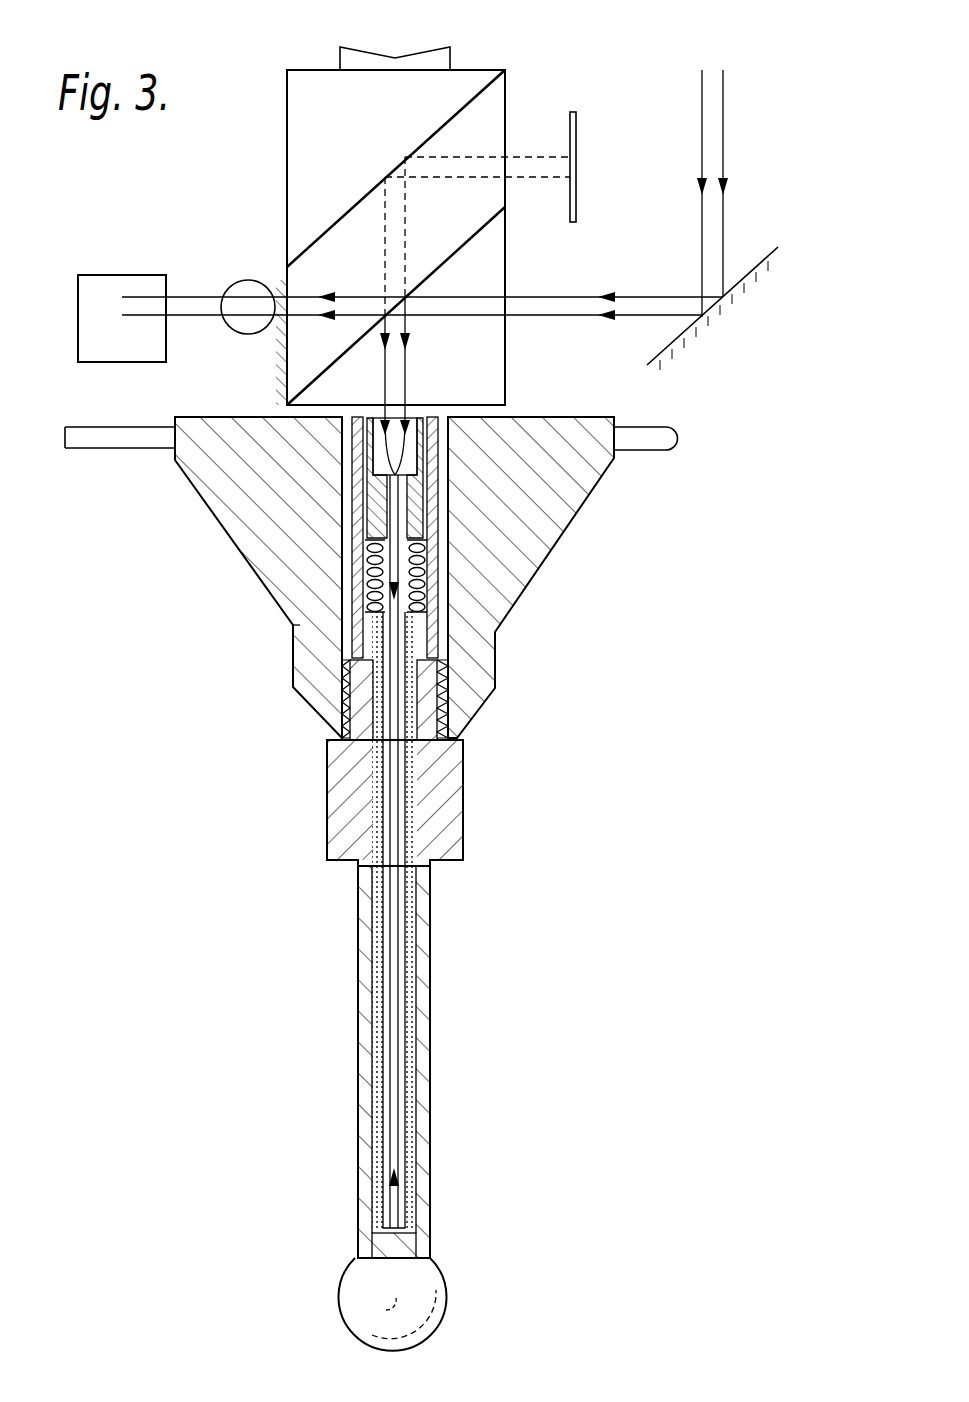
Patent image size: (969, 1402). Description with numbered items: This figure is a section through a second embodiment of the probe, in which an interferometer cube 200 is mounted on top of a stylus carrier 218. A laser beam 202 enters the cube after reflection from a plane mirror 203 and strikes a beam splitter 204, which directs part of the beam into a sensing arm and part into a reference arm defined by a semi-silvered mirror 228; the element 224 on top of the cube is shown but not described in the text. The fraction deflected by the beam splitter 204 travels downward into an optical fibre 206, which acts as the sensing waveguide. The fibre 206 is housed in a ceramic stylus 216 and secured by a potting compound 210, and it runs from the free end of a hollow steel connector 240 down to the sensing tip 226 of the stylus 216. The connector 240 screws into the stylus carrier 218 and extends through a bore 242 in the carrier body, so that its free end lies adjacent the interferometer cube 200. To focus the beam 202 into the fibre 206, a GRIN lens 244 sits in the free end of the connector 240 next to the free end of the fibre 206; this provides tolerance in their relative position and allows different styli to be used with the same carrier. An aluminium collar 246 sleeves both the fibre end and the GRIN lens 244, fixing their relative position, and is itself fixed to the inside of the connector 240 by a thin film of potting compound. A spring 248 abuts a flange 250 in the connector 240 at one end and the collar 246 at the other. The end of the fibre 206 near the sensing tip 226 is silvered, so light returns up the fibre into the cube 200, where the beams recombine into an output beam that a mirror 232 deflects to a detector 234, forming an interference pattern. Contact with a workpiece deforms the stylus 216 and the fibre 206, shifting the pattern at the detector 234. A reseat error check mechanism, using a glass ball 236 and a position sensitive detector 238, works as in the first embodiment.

The interferometer cube 200 is at (552, 66).
The laser beam 202 is at (715, 125).
The plane mirror 203 is at (745, 288).
The beam splitter 204 is at (478, 232).
The optical fibre 206 is at (400, 1062).
The potting compound 210 is at (412, 1150).
The ceramic stylus 216 is at (430, 992).
The stylus carrier 218 is at (550, 486).
The top element 224 is at (405, 57).
The sensing tip 226 is at (432, 1273).
The semi-silvered mirror 228 is at (282, 284).
The mirror 232 is at (478, 90).
The detector 234 is at (578, 140).
The glass ball 236 is at (245, 334).
The position sensitive detector 238 is at (123, 352).
The hollow steel connector 240 is at (446, 812).
The bore 242 is at (445, 612).
The GRIN lens 244 is at (378, 456).
The aluminium collar 246 is at (378, 512).
The spring 248 is at (432, 553).
The flange 250 is at (360, 625).